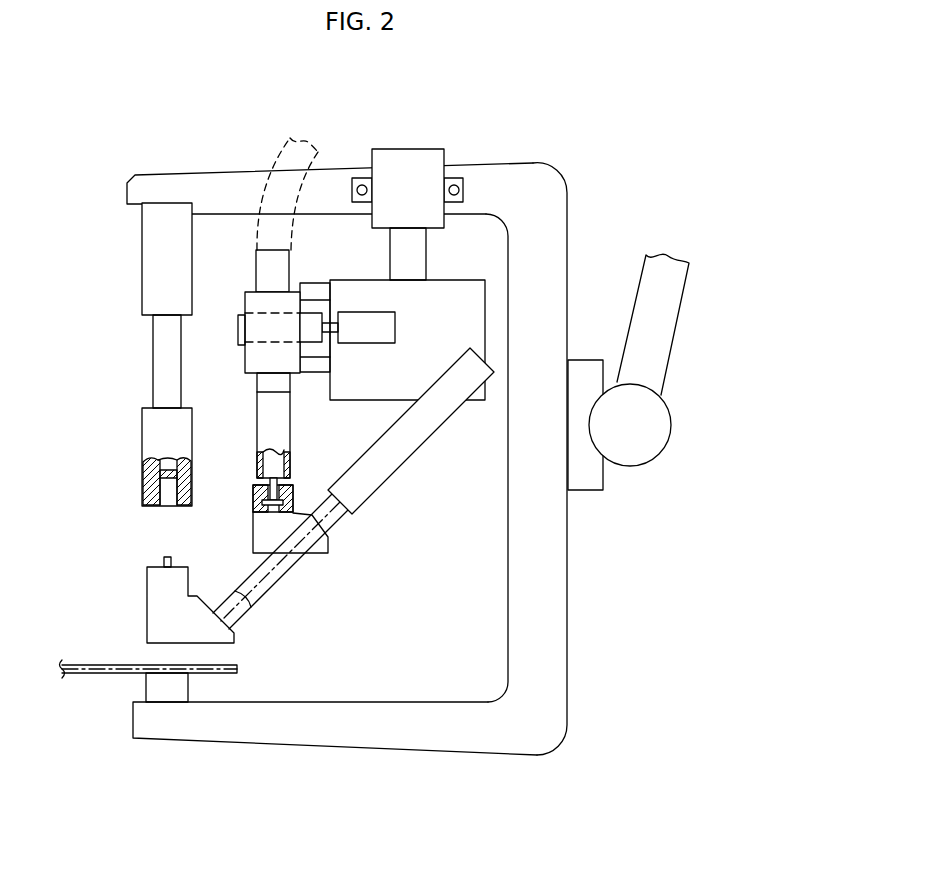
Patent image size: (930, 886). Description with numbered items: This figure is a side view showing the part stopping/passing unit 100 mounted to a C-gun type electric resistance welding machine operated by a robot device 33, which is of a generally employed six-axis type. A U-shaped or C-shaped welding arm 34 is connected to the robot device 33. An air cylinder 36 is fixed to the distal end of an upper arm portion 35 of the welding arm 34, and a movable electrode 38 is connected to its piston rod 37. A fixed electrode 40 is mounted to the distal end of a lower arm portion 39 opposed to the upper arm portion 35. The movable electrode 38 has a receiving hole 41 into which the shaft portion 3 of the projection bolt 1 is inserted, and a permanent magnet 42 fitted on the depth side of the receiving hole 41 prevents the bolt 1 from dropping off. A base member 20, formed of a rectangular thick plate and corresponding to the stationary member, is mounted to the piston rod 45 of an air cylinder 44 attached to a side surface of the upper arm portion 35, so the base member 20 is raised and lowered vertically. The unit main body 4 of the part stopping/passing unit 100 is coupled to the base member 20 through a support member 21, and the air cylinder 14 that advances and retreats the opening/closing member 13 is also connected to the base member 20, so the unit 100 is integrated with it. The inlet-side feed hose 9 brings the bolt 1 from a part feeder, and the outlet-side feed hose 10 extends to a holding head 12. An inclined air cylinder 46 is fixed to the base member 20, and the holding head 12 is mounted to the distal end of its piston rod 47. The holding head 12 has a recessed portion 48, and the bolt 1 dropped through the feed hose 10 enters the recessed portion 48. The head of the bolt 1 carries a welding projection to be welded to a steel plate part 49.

The bolt 1 is at (284, 465).
The shaft portion 3 is at (162, 561).
The unit main body 4 is at (240, 356).
The feed hose 9 is at (276, 152).
The feed hose 10 is at (257, 421).
The holding head 12 is at (147, 596).
The opening/closing member 13 is at (243, 324).
The air cylinder 14 is at (397, 327).
The base member 20 is at (362, 279).
The support member 21 is at (318, 287).
The robot device 33 is at (625, 303).
The welding arm 34 is at (505, 158).
The upper arm portion 35 is at (226, 172).
The air cylinder 36 is at (142, 261).
The piston rod 37 is at (153, 350).
The movable electrode 38 is at (142, 436).
The lower arm portion 39 is at (326, 701).
The fixed electrode 40 is at (146, 688).
The receiving hole 41 is at (168, 505).
The permanent magnet 42 is at (158, 481).
The air cylinder 44 is at (410, 148).
The piston rod 45 is at (428, 250).
The air cylinder 46 is at (432, 442).
The piston rod 47 is at (340, 522).
The recessed portion 48 is at (257, 492).
The steel plate part 49 is at (80, 664).
The part stopping/passing unit 100 is at (238, 286).